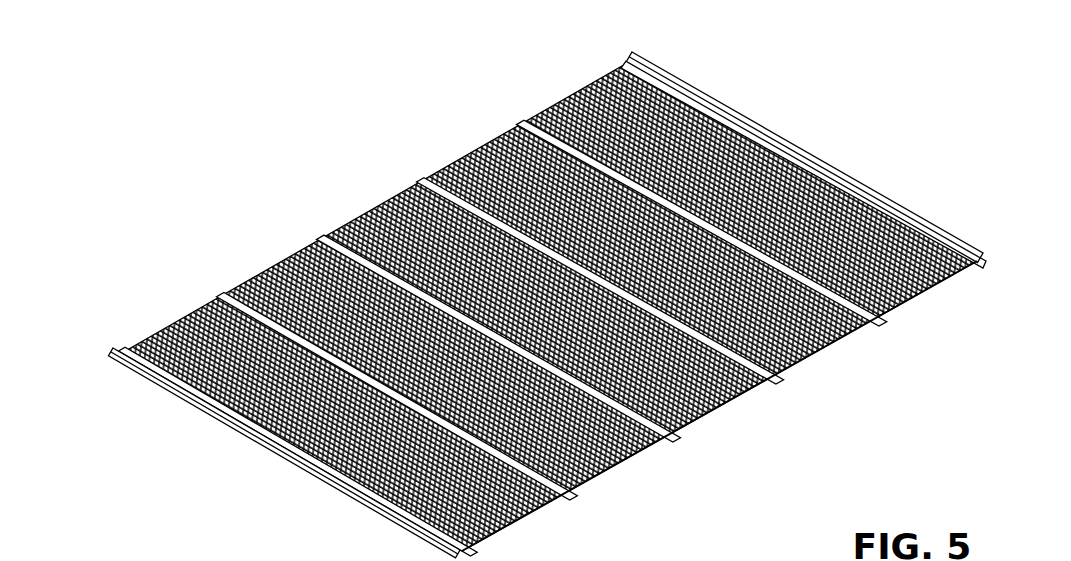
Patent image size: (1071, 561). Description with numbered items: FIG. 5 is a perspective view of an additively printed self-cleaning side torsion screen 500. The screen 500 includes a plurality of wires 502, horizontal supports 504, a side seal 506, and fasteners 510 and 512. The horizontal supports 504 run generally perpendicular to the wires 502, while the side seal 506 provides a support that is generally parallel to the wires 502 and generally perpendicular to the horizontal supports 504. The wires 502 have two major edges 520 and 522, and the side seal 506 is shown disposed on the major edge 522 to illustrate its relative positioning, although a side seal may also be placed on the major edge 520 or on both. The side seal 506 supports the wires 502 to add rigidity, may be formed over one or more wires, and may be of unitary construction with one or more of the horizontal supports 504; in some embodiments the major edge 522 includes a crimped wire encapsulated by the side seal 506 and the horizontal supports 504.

The screen 500 is at (762, 79).
The wires 502 is at (399, 207).
The horizontal supports 504 is at (141, 347).
The side seal 506 is at (797, 366).
The fastener 510 is at (203, 412).
The fastener 512 is at (833, 166).
The major edge 520 is at (478, 122).
The major edge 522 is at (722, 446).